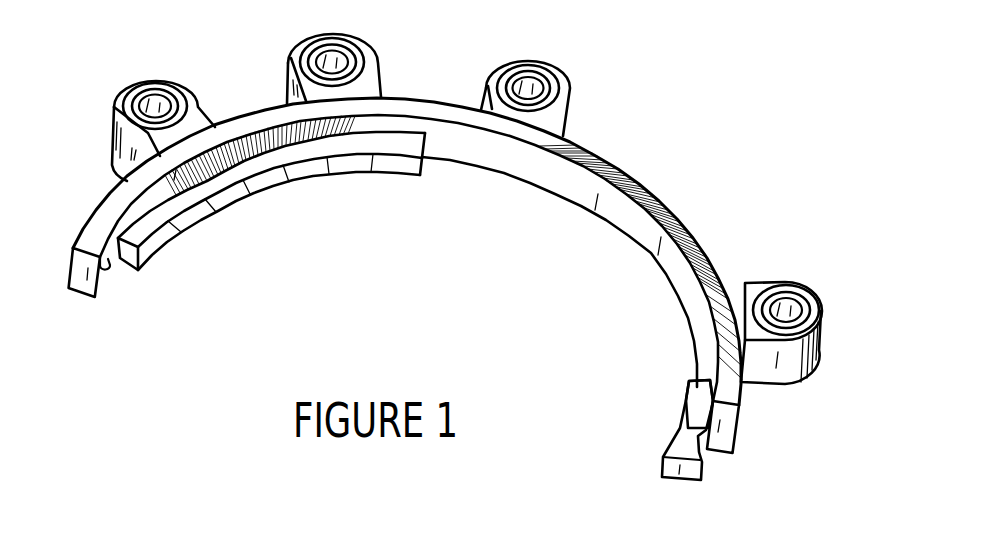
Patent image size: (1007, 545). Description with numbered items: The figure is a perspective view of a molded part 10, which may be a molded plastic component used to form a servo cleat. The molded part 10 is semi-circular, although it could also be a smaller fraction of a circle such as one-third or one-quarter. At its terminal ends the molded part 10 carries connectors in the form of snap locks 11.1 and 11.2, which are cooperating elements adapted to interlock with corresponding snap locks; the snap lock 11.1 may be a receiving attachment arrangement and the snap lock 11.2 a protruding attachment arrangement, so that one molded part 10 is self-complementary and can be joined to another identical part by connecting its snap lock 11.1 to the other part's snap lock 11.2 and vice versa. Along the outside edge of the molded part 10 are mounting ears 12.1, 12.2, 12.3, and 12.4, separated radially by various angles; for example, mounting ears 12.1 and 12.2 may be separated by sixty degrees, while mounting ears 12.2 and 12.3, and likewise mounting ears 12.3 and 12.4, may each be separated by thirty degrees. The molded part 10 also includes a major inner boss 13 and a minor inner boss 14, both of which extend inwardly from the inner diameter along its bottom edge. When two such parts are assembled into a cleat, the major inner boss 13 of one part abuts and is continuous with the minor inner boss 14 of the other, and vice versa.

The molded part 10 is at (461, 322).
The snap lock 11.1 is at (687, 433).
The snap lock 11.2 is at (118, 265).
The mounting ear 12.1 is at (783, 312).
The mounting ear 12.2 is at (528, 87).
The mounting ear 12.3 is at (333, 62).
The mounting ear 12.4 is at (158, 106).
The major inner boss 13 is at (304, 153).
The minor inner boss 14 is at (697, 397).